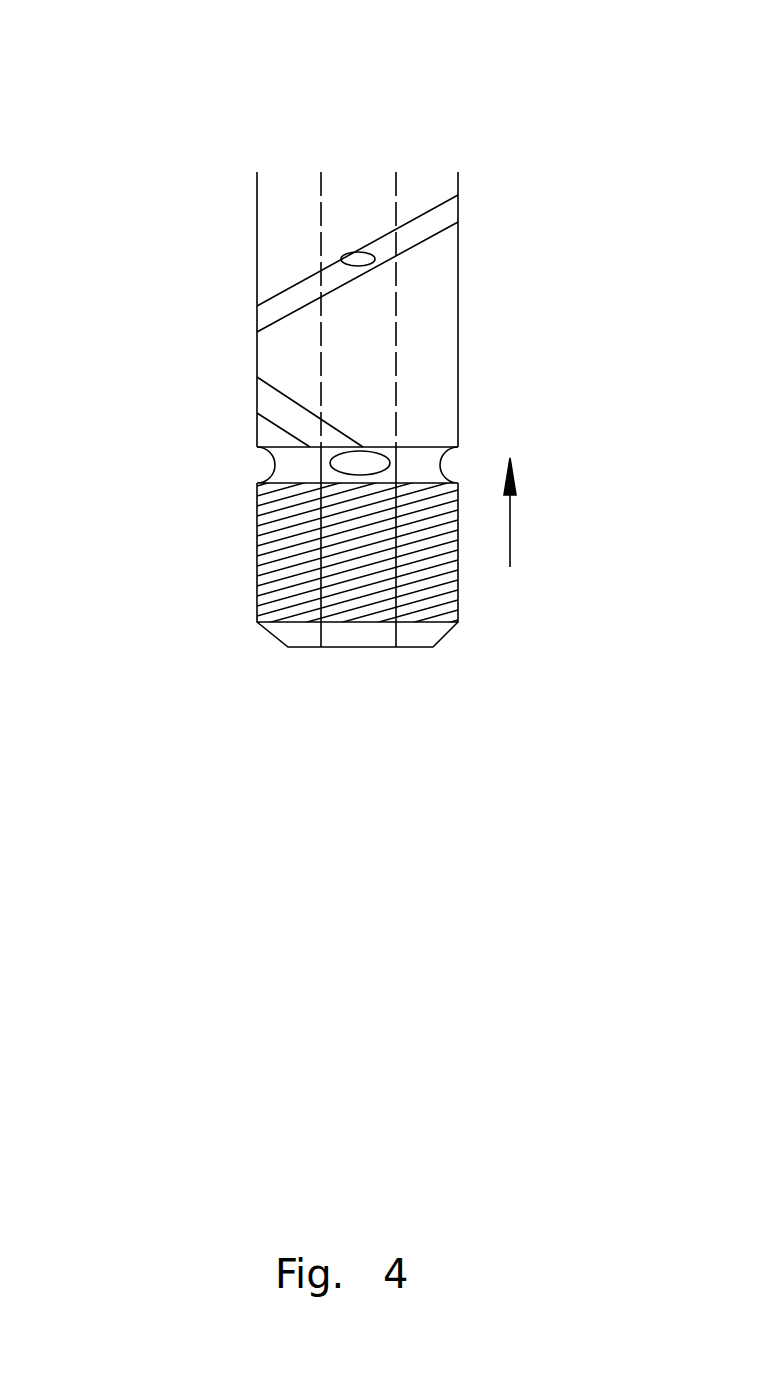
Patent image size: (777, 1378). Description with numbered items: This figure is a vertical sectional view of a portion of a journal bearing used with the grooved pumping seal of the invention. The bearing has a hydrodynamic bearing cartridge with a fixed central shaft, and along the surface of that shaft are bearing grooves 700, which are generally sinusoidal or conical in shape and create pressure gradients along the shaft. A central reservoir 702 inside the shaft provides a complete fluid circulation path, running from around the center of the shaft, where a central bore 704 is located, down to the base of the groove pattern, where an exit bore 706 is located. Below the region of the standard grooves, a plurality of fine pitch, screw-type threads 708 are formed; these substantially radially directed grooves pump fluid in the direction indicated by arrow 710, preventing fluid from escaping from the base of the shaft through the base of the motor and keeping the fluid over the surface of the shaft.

The bearing grooves 700 is at (407, 233).
The central reservoir 702 is at (368, 348).
The central bore 704 is at (355, 252).
The exit bore 706 is at (360, 463).
The fine pitch threads 708 is at (397, 542).
The arrow 710 is at (512, 528).